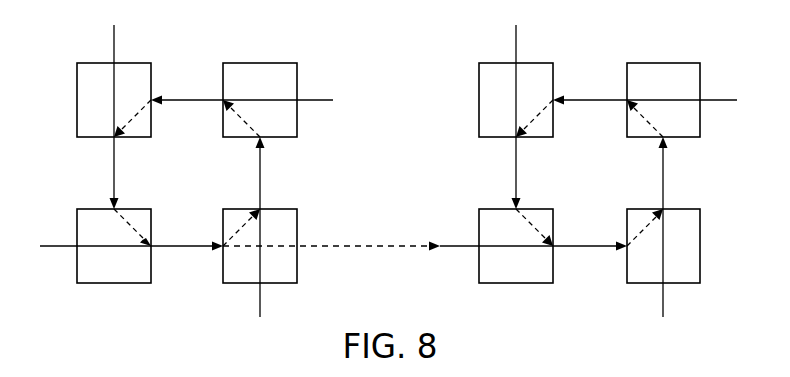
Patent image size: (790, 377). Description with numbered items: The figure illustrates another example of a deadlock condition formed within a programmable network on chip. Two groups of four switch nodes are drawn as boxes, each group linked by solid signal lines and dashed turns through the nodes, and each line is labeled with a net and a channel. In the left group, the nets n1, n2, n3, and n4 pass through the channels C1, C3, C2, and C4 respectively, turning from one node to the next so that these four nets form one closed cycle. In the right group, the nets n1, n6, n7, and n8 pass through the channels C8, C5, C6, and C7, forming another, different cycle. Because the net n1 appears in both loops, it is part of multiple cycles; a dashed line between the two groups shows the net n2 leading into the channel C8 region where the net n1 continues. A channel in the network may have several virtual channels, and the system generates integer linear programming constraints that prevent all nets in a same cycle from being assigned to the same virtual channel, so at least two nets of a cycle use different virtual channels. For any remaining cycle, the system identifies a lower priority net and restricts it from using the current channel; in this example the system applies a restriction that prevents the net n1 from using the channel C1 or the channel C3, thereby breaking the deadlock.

The net n1 is at (354, 150).
The net n2 is at (240, 259).
The net n3 is at (275, 227).
The net n4 is at (242, 88).
The net n6 is at (501, 117).
The net n7 is at (645, 88).
The net n8 is at (678, 227).
The channel C1 is at (132, 204).
The channel C2 is at (241, 141).
The channel C3 is at (218, 227).
The channel C4 is at (156, 118).
The channel C5 is at (534, 204).
The channel C6 is at (558, 118).
The channel C7 is at (645, 141).
The channel C8 is at (621, 227).